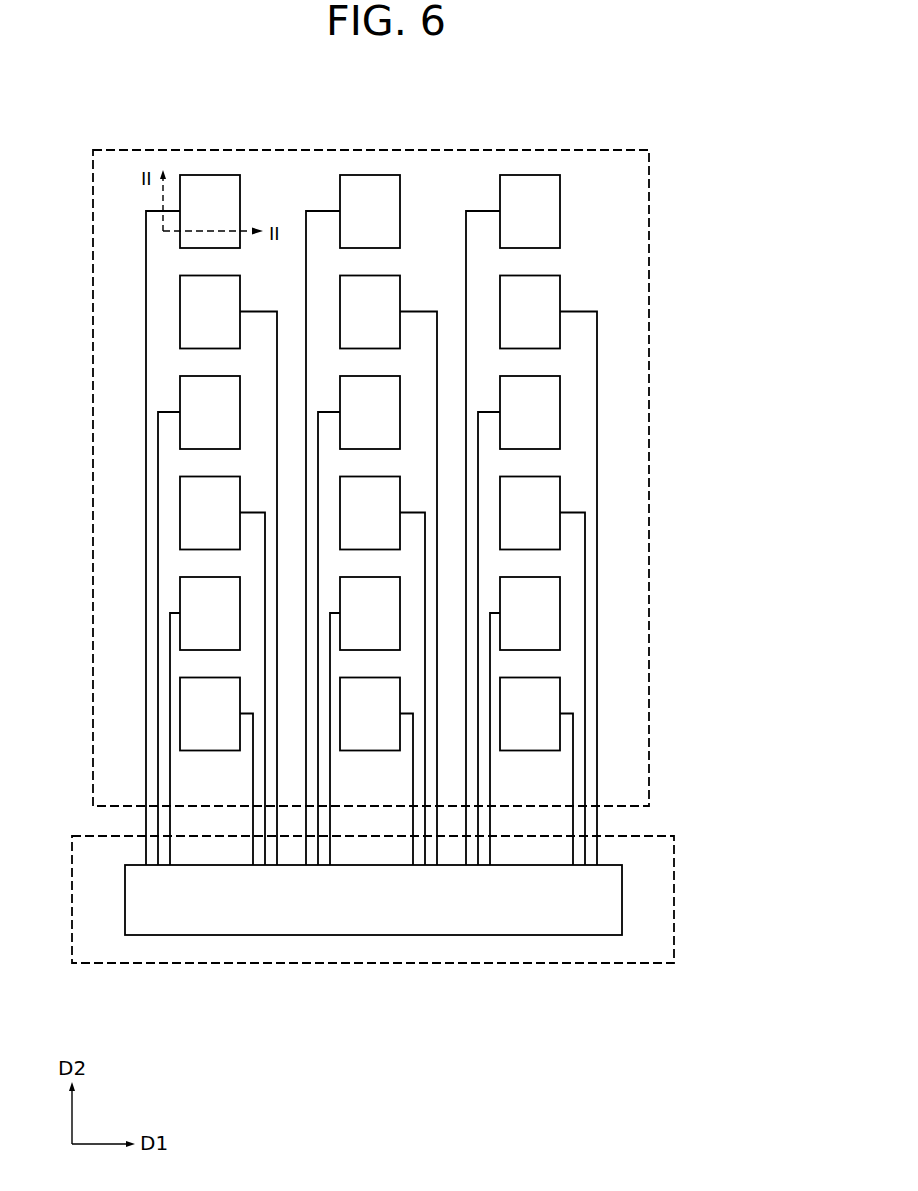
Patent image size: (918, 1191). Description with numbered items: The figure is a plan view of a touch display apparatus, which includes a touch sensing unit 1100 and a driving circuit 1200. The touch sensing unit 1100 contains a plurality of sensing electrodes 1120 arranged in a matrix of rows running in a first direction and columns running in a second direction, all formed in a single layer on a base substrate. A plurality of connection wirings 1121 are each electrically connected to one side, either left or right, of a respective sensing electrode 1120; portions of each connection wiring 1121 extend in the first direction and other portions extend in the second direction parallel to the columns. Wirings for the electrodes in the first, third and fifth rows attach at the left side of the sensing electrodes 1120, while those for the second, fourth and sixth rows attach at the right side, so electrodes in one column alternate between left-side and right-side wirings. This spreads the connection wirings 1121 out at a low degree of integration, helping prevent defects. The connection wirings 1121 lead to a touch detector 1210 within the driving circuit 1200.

The touch sensing unit 1100 is at (649, 291).
The sensing electrode 1120 is at (206, 175).
The connection wiring 1121 is at (146, 288).
The driving circuit 1200 is at (675, 898).
The touch detector 1210 is at (373, 900).